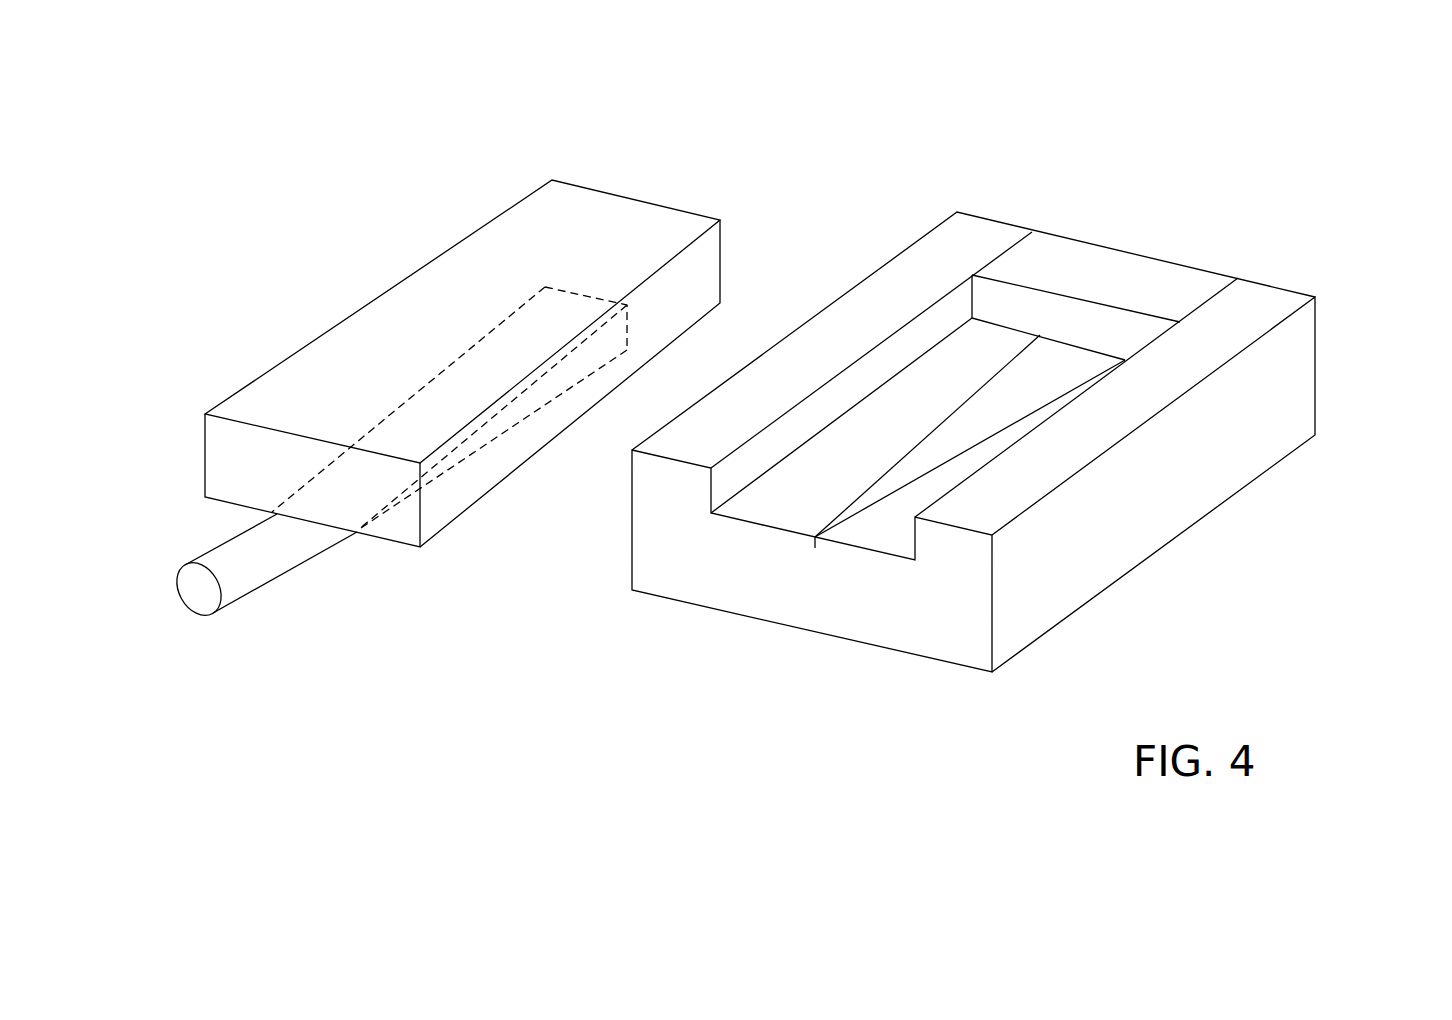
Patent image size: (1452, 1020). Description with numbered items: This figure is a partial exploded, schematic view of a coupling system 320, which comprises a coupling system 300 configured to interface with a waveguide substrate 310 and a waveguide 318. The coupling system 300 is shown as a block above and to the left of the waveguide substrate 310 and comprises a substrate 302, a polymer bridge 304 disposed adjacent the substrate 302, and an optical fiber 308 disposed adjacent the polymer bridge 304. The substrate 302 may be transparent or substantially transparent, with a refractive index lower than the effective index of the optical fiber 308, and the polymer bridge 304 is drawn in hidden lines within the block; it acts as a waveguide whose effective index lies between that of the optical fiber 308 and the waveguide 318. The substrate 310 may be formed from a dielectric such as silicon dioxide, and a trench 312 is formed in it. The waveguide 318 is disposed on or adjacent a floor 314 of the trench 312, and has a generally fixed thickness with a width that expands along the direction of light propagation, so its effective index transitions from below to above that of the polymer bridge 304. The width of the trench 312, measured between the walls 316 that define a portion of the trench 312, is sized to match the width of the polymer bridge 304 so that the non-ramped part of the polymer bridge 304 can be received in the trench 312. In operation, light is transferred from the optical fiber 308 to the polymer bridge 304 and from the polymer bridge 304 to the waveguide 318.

The coupling system 320 is at (232, 138).
The coupling system 300 is at (507, 206).
The substrate 302 is at (563, 196).
The polymer bridge 304 is at (420, 388).
The optical fiber 308 is at (251, 583).
The substrate 310 is at (1320, 370).
The trench 312 is at (796, 488).
The floor 314 is at (893, 446).
The wall 316 is at (816, 412).
The waveguide 318 is at (1065, 362).